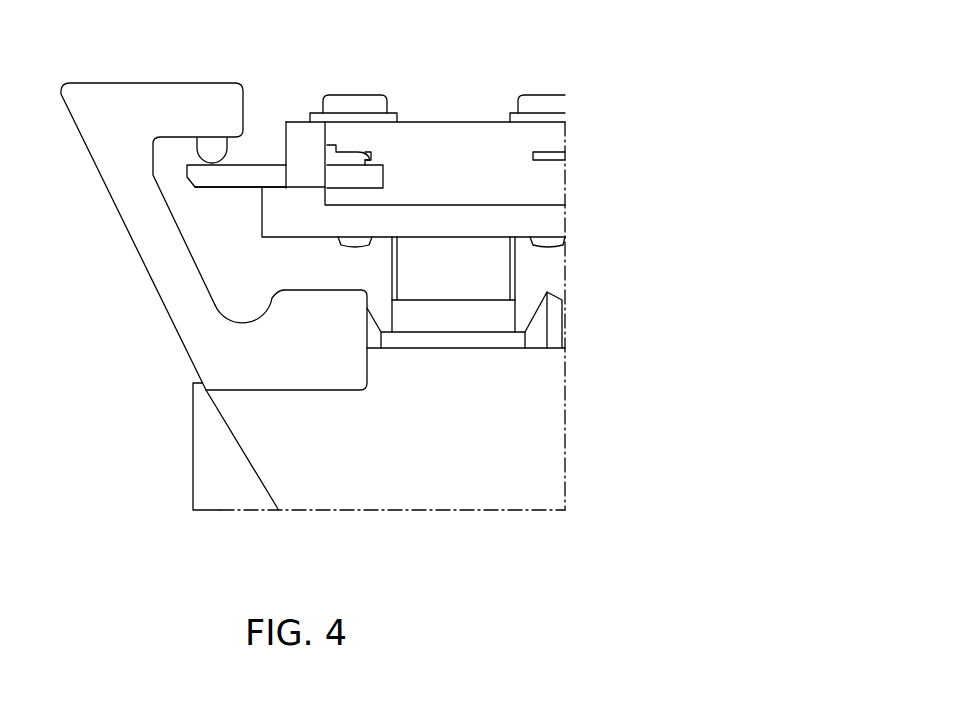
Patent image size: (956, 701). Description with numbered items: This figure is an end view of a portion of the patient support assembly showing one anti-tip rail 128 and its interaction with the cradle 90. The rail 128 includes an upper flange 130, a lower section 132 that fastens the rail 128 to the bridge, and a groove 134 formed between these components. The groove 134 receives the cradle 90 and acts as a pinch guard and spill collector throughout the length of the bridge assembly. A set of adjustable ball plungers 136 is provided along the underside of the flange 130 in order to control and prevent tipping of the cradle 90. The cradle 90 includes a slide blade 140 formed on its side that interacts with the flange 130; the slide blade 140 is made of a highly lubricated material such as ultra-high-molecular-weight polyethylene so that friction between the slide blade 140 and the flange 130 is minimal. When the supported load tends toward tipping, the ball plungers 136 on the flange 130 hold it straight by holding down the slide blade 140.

The cradle 90 is at (376, 179).
The anti-tip rail 128 is at (213, 210).
The upper flange 130 is at (178, 210).
The lower section 132 is at (315, 290).
The groove 134 is at (255, 320).
The adjustable ball plunger 136 is at (230, 147).
The slide blade 140 is at (236, 189).